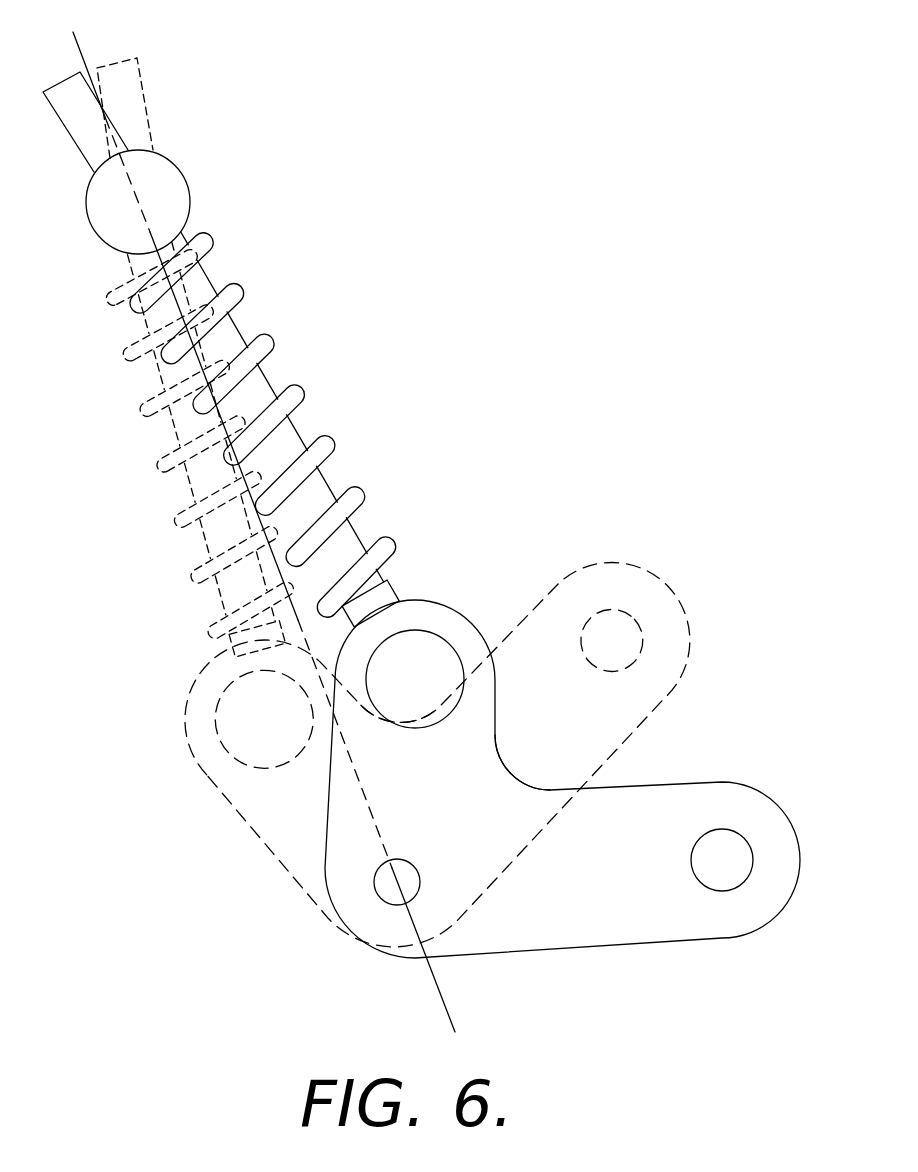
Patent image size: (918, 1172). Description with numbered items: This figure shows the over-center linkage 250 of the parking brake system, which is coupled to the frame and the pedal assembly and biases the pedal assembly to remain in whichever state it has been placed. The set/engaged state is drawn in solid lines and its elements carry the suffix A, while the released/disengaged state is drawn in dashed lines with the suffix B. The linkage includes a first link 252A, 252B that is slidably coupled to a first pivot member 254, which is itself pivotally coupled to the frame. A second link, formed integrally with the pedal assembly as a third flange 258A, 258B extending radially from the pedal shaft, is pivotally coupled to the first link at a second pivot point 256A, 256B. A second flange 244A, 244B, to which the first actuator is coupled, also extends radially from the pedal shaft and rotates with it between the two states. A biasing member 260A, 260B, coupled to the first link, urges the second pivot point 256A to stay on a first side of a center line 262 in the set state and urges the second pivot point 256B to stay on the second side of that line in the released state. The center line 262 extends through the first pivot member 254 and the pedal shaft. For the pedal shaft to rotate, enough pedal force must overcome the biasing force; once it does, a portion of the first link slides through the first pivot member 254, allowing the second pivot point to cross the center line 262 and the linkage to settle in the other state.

The second flange 244A is at (647, 920).
The second flange 244B is at (627, 697).
The over-center linkage 250 is at (647, 240).
The first link 252A is at (290, 442).
The first link 252B is at (205, 547).
The first pivot member 254 is at (175, 187).
The second pivot point 256A is at (423, 648).
The second pivot point 256B is at (240, 717).
The third flange 258A is at (465, 745).
The third flange 258B is at (242, 792).
The biasing member 260A is at (287, 320).
The biasing member 260B is at (157, 403).
The center line 262 is at (447, 1018).